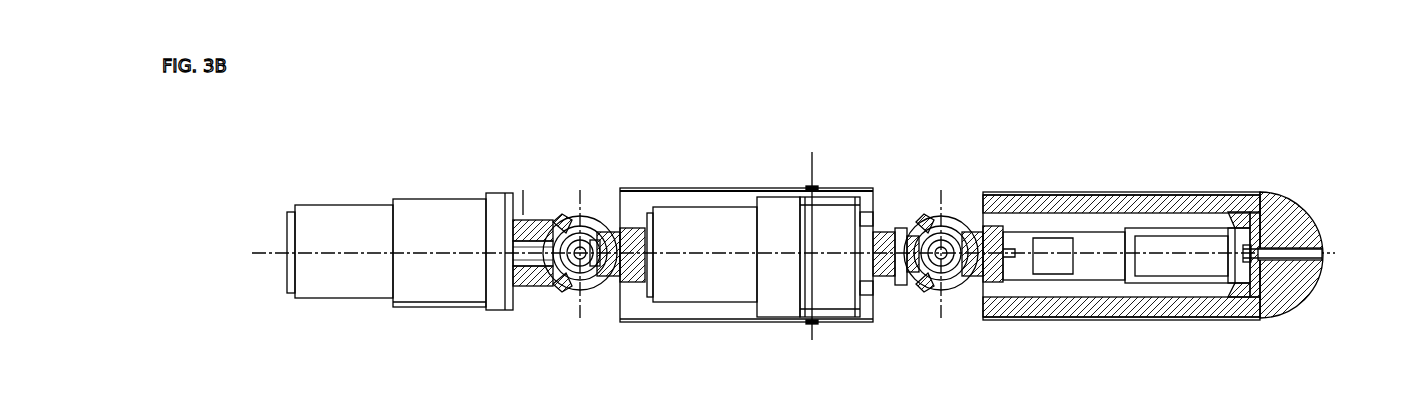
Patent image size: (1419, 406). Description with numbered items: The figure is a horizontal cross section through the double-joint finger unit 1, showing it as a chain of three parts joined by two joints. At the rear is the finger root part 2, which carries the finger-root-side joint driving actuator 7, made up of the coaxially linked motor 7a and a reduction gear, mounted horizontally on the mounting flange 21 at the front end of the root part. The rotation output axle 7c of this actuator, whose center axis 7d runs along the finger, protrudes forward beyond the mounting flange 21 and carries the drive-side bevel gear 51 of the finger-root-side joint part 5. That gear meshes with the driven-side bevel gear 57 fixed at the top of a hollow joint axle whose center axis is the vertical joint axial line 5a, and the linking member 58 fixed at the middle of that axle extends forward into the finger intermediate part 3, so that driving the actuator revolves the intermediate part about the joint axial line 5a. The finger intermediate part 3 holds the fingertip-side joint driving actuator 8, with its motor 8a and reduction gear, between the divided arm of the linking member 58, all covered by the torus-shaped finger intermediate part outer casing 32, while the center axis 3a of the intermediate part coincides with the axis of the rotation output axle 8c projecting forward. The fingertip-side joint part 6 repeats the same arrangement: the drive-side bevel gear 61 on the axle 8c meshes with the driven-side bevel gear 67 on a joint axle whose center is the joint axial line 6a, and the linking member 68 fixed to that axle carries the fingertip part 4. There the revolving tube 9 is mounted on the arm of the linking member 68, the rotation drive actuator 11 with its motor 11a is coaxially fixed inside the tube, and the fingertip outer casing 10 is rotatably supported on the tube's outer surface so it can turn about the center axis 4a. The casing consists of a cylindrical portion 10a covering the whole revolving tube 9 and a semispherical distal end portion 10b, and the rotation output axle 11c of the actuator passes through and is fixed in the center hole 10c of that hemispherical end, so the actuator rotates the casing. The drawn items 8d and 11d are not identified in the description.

The double-joint finger unit 1 is at (1080, 128).
The finger root part 2 is at (413, 310).
The finger-root-side joint driving actuator 7 is at (424, 208).
The motor 7a is at (362, 205).
The center axis 7d is at (420, 215).
The rotation output axle 7c is at (507, 208).
The mounting flange 21 is at (510, 193).
The drive-side bevel gear 51 is at (548, 220).
The driven-side bevel gear 57 is at (593, 212).
The finger-root-side joint part 5 is at (597, 302).
The joint axial line 5a is at (611, 323).
The linking member 58 is at (626, 225).
The finger intermediate part 3 is at (733, 326).
The finger intermediate part outer casing 32 is at (737, 188).
The center axis 3a is at (703, 250).
The fingertip-side joint driving actuator 8 is at (830, 207).
The motor 8a is at (752, 198).
The reducer gear portion 8d is at (826, 210).
The rotation output axle 8c is at (884, 206).
The drive-side bevel gear 61 is at (906, 216).
The driven-side bevel gear 67 is at (951, 212).
The fingertip-side joint part 6 is at (927, 303).
The joint axial line 6a is at (965, 298).
The linking member 68 is at (978, 214).
The fingertip part 4 is at (1105, 322).
The revolving tube 9 is at (1033, 300).
The center axis 4a is at (1103, 250).
The rotation drive actuator 11 is at (1215, 191).
The motor 11a is at (1148, 212).
The slider block 11d is at (1182, 240).
The rotation output axle 11c is at (1267, 212).
The fingertip outer casing 10 is at (1285, 294).
The cylindrical portion 10a is at (1190, 316).
The semispherical distal end portion 10b is at (1290, 300).
The center hole 10c is at (1252, 360).